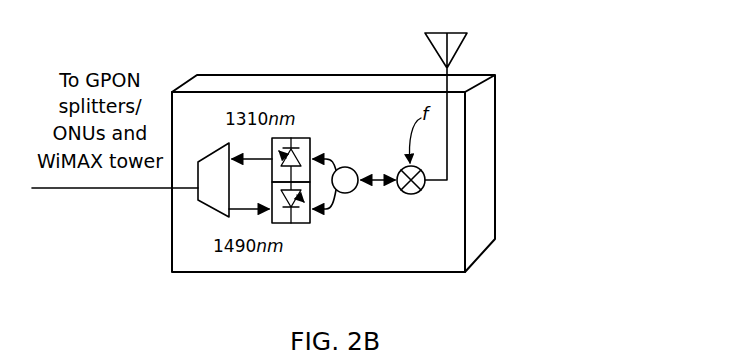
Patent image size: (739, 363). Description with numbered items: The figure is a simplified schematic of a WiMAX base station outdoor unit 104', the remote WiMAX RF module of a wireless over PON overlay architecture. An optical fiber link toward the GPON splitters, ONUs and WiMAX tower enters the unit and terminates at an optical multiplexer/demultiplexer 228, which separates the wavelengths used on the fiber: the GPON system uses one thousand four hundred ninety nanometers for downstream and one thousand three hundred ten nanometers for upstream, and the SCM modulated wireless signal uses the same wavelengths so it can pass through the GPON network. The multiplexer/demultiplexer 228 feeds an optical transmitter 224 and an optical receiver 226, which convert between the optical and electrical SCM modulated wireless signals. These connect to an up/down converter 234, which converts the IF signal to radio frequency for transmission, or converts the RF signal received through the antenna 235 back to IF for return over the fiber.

The BS outdoor unit 104' is at (333, 143).
The optical transmitter 224 is at (300, 137).
The optical receiver 226 is at (300, 226).
The optical multiplexer/demultiplexer 228 is at (198, 192).
The up/down converter 234 is at (382, 186).
The antenna 235 is at (453, 33).